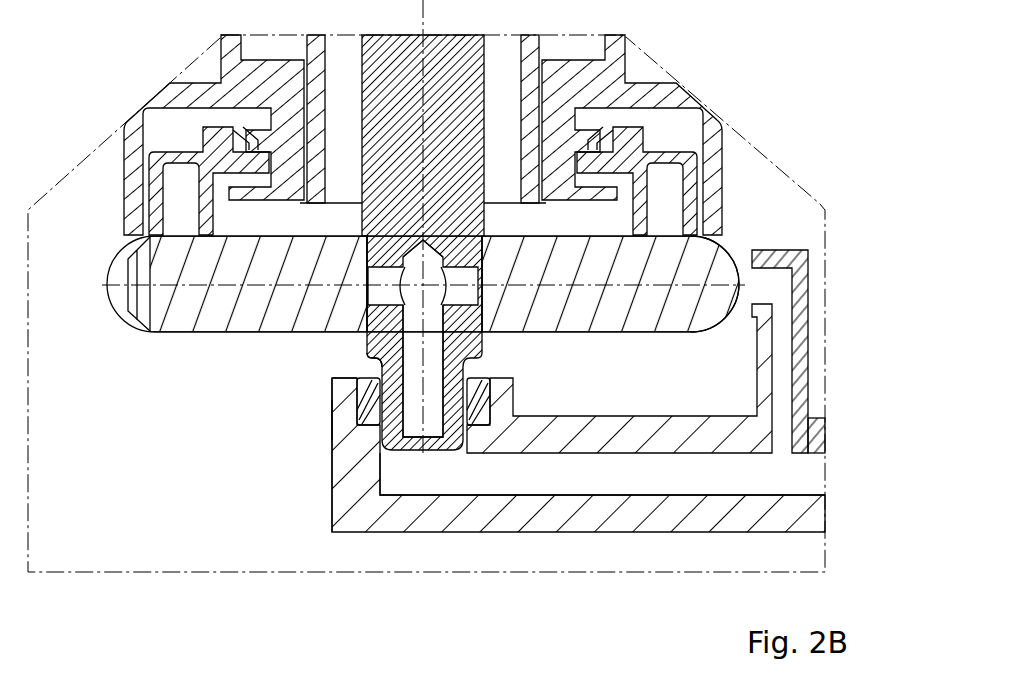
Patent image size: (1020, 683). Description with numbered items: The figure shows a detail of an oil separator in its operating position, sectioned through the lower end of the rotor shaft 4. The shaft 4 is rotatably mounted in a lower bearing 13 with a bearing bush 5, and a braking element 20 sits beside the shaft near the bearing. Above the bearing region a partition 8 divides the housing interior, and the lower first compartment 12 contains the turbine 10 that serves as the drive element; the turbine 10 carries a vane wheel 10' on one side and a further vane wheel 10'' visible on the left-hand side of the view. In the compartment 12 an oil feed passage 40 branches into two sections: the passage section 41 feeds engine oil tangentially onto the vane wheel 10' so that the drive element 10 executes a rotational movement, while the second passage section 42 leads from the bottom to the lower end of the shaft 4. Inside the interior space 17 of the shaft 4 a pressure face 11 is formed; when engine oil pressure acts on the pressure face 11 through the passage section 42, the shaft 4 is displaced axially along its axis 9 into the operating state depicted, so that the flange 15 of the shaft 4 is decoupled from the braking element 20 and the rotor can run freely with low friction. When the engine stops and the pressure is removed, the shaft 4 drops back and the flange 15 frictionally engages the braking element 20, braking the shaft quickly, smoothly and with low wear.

The shaft 4 is at (452, 124).
The bearing bush 5 is at (333, 420).
The partition 8 is at (148, 90).
The axis of rotation 9 is at (417, 13).
The turbine 10 is at (426, 319).
The vane wheel 10' is at (781, 234).
The further vane wheel 10'' is at (105, 324).
The pressure face 11 is at (423, 240).
The first compartment 12 is at (214, 444).
The lower bearing 13 is at (330, 387).
The flange 15 is at (377, 361).
The interior space 17 is at (432, 411).
The braking element 20 is at (482, 376).
The oil feed passage 40 is at (778, 473).
The passage section 41 is at (778, 333).
The second passage section 42 is at (538, 486).